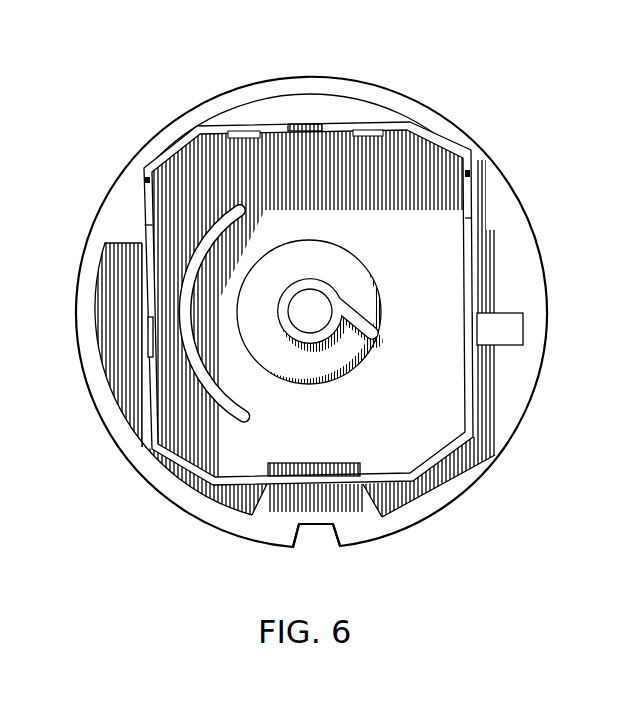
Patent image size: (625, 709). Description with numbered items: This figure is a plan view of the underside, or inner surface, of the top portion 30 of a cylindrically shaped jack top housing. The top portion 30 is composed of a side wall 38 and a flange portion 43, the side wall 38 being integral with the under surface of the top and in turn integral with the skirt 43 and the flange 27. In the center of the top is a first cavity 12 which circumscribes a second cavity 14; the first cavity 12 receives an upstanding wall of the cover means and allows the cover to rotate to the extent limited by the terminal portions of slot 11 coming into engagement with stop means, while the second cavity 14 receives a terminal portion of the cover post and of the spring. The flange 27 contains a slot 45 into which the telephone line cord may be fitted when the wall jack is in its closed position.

The slot 11 is at (256, 412).
The first cavity 12 is at (323, 276).
The second cavity 14 is at (281, 301).
The flange 27 is at (268, 512).
The top portion 30 is at (501, 115).
The side wall 38 is at (246, 477).
The flange portion 43 is at (139, 235).
The slot 45 is at (338, 546).